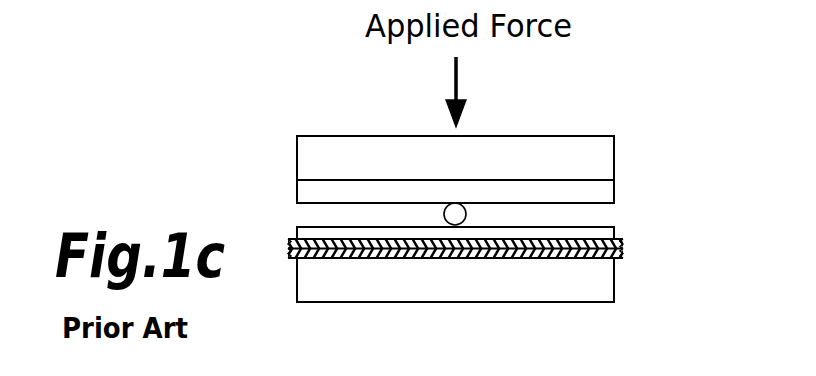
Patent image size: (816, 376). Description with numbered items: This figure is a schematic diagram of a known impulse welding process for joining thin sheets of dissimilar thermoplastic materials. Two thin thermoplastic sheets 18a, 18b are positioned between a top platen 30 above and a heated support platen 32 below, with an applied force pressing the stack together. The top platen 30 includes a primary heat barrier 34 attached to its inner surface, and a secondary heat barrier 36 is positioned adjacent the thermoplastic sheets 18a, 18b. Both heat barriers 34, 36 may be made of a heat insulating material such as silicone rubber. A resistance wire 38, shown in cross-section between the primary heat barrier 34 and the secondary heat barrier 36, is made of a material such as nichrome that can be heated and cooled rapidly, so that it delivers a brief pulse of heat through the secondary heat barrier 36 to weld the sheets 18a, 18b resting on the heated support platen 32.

The top platen 30 is at (316, 170).
The primary heat barrier 34 is at (598, 188).
The resistance wire 38 is at (466, 213).
The secondary heat barrier 36 is at (598, 232).
The thermoplastic sheet 18a is at (620, 243).
The thermoplastic sheet 18b is at (621, 257).
The heated support platen 32 is at (603, 288).